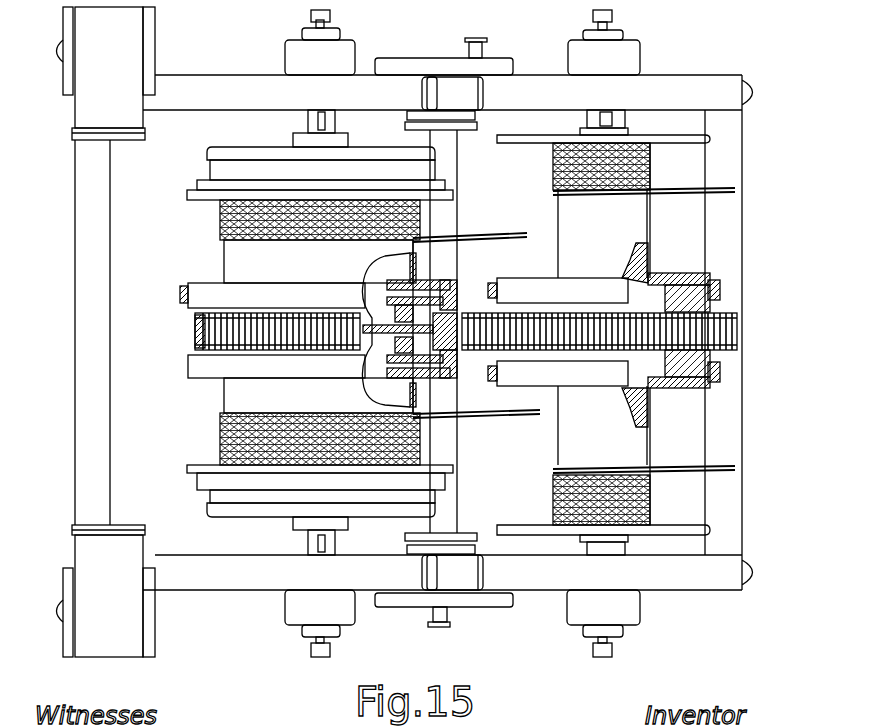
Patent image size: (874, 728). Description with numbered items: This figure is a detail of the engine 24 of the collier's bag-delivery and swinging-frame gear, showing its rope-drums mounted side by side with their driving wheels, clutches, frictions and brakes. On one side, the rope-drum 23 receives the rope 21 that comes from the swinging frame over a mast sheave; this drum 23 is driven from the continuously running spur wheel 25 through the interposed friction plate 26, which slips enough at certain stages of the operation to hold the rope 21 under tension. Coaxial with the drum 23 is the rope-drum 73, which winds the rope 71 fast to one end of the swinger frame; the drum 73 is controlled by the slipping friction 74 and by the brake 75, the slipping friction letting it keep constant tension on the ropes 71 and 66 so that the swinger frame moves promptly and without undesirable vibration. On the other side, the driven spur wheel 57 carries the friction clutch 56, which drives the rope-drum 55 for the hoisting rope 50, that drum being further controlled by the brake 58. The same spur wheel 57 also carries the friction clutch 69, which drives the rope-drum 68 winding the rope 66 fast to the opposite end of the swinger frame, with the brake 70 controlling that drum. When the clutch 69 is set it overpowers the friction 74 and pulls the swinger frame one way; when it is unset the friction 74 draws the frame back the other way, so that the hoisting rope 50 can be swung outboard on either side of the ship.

The rope 21 is at (528, 418).
The rope-drum 23 is at (243, 393).
The engine 24 is at (88, 334).
The spur wheel 25 is at (210, 330).
The friction plate 26 is at (438, 380).
The hoisting rope 50 is at (677, 471).
The rope-drum 55 is at (602, 425).
The friction clutch 56 is at (720, 368).
The spur wheel 57 is at (713, 330).
The brake 58 is at (717, 383).
The rope 66 is at (686, 190).
The rope-drum 68 is at (602, 234).
The friction clutch 69 is at (720, 292).
The brake 70 is at (717, 287).
The rope 71 is at (477, 234).
The rope-drum 73 is at (318, 261).
The slipping friction 74 is at (438, 288).
The brake 75 is at (180, 295).